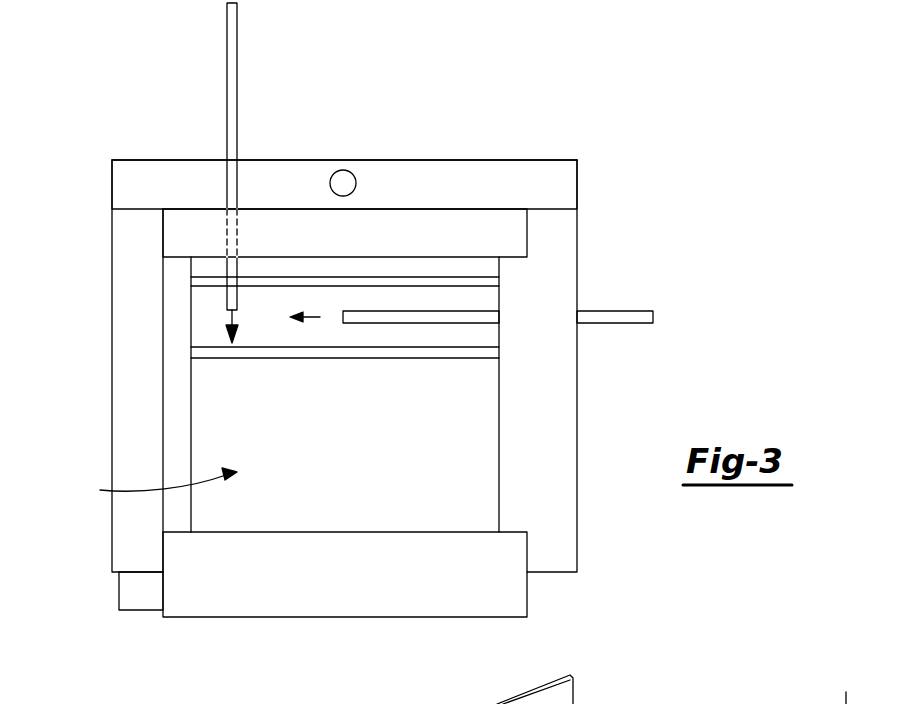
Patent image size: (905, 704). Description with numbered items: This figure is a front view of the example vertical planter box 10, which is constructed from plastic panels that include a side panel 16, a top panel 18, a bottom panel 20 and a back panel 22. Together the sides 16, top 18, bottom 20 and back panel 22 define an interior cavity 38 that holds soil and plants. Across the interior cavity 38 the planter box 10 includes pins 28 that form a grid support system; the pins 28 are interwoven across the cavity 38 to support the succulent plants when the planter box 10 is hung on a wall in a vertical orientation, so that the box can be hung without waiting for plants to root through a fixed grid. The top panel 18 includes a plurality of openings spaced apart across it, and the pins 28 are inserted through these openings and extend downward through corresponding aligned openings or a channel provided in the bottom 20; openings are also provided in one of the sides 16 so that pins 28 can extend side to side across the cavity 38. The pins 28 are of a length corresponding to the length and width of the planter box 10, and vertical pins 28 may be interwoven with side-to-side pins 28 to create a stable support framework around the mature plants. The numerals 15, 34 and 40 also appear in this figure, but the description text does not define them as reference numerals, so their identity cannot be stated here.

The vertical planter box 10 is at (622, 155).
The component 15 is at (850, 686).
The side panel 16 is at (131, 319).
The top panel 18 is at (397, 233).
The bottom panel 20 is at (235, 587).
The back panel 22 is at (468, 477).
The pins 28 is at (232, 55).
The top cover 34 is at (506, 178).
The interior cavity 38 is at (145, 486).
The plate 40 is at (568, 689).